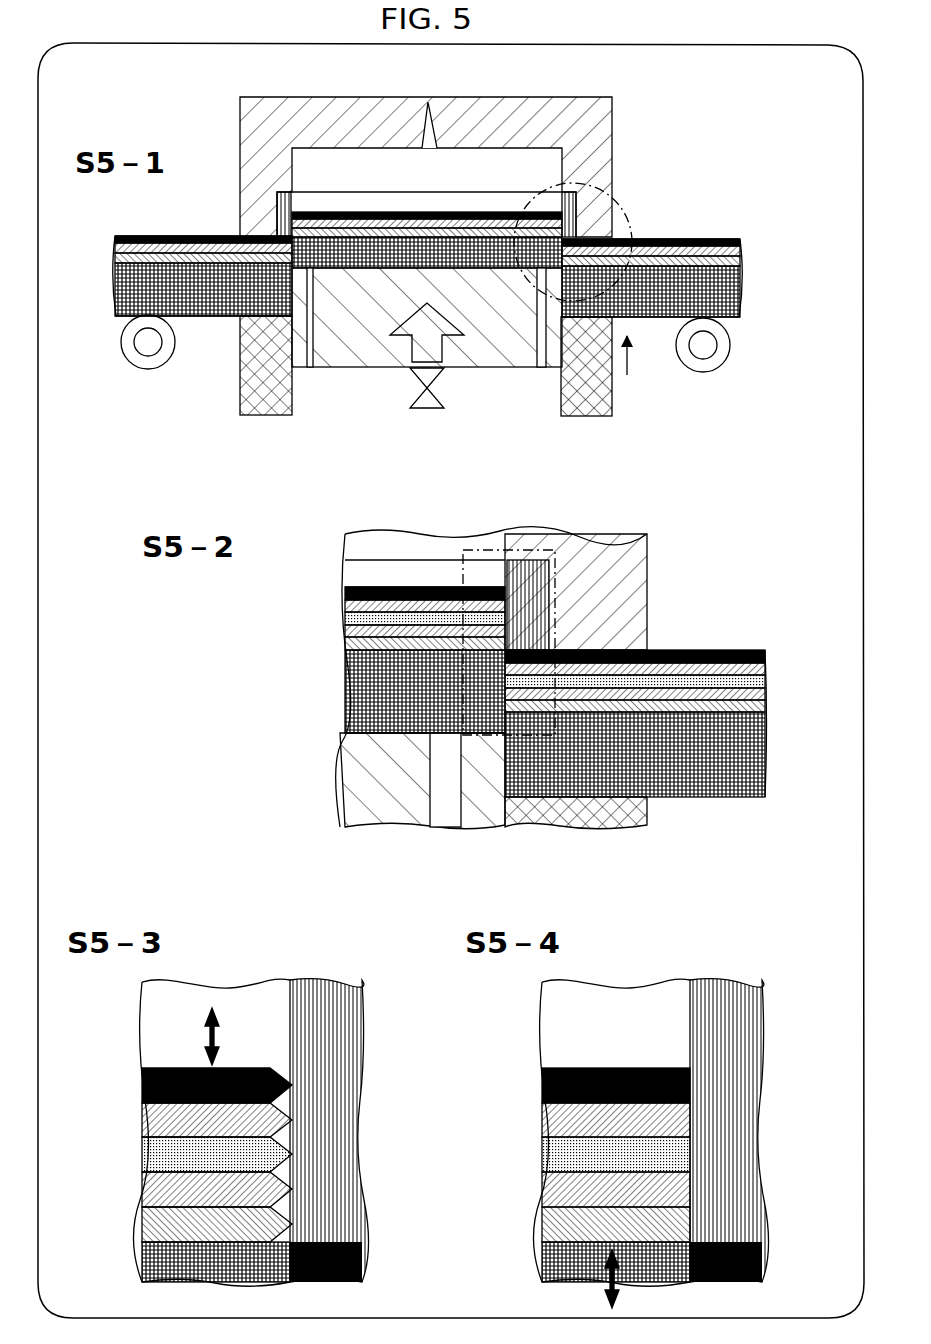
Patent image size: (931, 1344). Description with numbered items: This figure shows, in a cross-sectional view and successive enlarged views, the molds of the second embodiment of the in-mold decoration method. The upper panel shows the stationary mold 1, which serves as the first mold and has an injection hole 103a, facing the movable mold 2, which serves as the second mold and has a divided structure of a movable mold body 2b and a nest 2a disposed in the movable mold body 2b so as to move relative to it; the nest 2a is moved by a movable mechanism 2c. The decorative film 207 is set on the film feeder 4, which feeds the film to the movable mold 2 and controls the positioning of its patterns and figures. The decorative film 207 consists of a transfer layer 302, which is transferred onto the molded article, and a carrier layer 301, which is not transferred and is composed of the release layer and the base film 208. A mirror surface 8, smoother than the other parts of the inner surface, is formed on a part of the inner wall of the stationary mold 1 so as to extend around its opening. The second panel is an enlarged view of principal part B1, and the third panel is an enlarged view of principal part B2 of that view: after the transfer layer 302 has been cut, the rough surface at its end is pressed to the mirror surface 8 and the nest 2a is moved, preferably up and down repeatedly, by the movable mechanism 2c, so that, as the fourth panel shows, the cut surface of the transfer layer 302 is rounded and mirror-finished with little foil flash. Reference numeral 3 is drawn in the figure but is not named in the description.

The stationary mold 1 is at (610, 113).
The injection hole 103a is at (428, 118).
The mirror surface 8 is at (572, 200).
The decorative film 207 is at (457, 735).
The transfer layer 302 is at (330, 587).
The carrier layer 301 is at (330, 650).
The base film 208 is at (688, 785).
The movable mold 2 is at (446, 574).
The nest 2a is at (360, 352).
The movable mold body 2b is at (272, 410).
The movable mechanism 2c is at (462, 389).
The slit 3 is at (312, 360).
The film feeder 4 is at (148, 369).
The principal part B1 is at (627, 232).
The principal part B2 is at (590, 550).